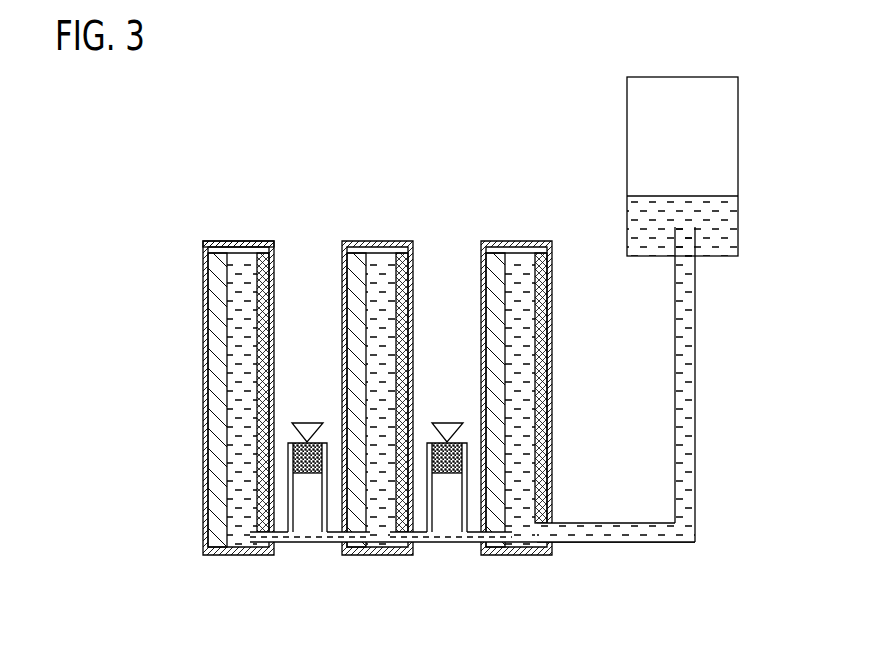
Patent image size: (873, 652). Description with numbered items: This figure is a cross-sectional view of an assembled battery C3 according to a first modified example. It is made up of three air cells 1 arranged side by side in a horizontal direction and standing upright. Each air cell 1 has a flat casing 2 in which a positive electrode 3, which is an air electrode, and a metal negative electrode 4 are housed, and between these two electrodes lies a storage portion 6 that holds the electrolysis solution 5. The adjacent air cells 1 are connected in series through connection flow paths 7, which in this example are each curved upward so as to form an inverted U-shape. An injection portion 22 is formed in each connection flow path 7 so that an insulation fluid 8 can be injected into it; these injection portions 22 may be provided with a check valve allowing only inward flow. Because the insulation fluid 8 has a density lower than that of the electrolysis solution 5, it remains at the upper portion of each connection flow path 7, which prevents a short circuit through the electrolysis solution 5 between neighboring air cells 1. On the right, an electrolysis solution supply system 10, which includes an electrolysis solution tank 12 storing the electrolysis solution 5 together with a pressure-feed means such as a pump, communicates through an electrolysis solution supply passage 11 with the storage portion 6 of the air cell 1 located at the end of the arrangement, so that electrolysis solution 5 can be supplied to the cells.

The air cell 1 is at (247, 232).
The casing 2 is at (208, 295).
The positive electrode 3 is at (228, 353).
The metal negative electrode 4 is at (215, 416).
The electrolysis solution 5 is at (240, 480).
The storage portion 6 is at (238, 243).
The connection flow path 7 is at (288, 543).
The insulation fluid 8 is at (305, 466).
The electrolysis solution supply system 10 is at (698, 346).
The electrolysis solution supply passage 11 is at (695, 500).
The electrolysis solution tank 12 is at (738, 137).
The injection portion 22 is at (307, 422).
The assembled battery C3 is at (511, 157).